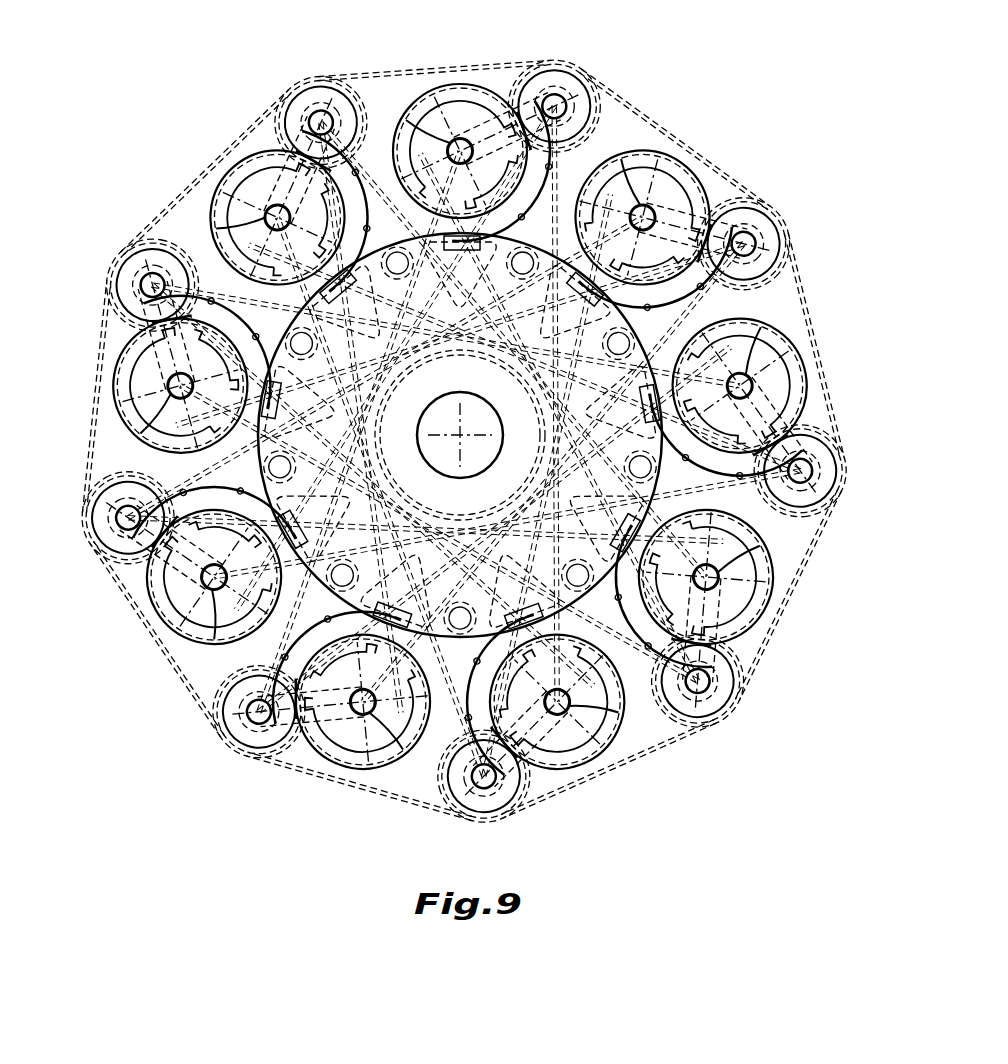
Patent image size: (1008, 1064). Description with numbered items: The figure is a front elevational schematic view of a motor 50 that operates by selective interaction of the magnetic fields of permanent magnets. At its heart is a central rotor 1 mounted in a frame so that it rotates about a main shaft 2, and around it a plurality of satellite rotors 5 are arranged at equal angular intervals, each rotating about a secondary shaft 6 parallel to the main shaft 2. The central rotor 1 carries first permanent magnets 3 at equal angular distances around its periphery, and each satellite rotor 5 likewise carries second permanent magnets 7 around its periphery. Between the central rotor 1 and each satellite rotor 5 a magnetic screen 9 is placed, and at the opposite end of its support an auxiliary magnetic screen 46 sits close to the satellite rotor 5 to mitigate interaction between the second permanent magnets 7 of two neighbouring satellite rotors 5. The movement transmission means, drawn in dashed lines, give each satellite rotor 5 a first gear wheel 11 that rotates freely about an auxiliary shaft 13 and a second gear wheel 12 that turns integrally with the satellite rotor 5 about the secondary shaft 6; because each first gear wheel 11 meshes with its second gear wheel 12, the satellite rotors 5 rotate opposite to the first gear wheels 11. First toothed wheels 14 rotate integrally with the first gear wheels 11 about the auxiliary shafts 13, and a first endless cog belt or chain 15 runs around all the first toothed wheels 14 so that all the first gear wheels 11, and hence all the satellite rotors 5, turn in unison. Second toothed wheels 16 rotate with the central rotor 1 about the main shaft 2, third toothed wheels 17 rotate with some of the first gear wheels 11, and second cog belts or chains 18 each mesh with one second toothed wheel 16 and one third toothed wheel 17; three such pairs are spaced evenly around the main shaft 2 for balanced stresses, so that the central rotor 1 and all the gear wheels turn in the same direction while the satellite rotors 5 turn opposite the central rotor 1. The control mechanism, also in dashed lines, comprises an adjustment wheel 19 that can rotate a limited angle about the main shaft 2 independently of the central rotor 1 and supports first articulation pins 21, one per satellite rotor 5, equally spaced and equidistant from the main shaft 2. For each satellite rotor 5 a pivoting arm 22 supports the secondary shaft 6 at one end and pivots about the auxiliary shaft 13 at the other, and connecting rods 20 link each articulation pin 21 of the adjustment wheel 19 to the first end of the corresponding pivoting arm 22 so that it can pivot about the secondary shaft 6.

The central rotor 1 is at (654, 522).
The main shaft 2 is at (437, 420).
The first permanent magnets 3 is at (470, 252).
The satellite rotors 5 is at (462, 84).
The secondary shafts 6 is at (425, 148).
The second permanent magnets 7 is at (460, 435).
The magnetic screen 9 is at (440, 232).
The first gear wheel 11 is at (316, 92).
The second gear wheel 12 is at (420, 84).
The auxiliary shaft 13 is at (556, 100).
The first toothed wheels 14 is at (600, 95).
The first endless cog belt or chain 15 is at (372, 72).
The second toothed wheels 16 is at (460, 518).
The third toothed wheels 17 is at (800, 258).
The second cog belts or chains 18 is at (435, 335).
The adjustment wheel 19 is at (312, 475).
The connecting rods 20 is at (526, 222).
The first articulation pins 21 is at (492, 270).
The pivoting arm 22 is at (501, 88).
The auxiliary magnetic screen 46 is at (552, 168).
The motor 50 is at (136, 126).